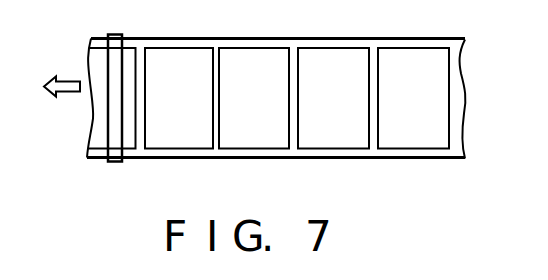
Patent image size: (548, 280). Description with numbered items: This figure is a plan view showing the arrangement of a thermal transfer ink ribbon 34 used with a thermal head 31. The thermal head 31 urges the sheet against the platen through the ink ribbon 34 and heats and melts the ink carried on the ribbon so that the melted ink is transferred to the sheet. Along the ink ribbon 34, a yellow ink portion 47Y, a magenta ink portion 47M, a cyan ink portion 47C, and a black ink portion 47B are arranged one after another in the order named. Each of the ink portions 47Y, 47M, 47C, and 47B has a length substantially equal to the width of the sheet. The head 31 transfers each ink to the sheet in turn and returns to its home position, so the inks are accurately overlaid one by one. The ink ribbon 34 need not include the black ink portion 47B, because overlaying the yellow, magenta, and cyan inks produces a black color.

The thermal head 31 is at (113, 31).
The thermal transfer ink ribbon 34 is at (320, 35).
The yellow ink portion 47Y is at (178, 146).
The magenta ink portion 47M is at (260, 146).
The cyan ink portion 47C is at (340, 146).
The black ink portion 47B is at (417, 146).